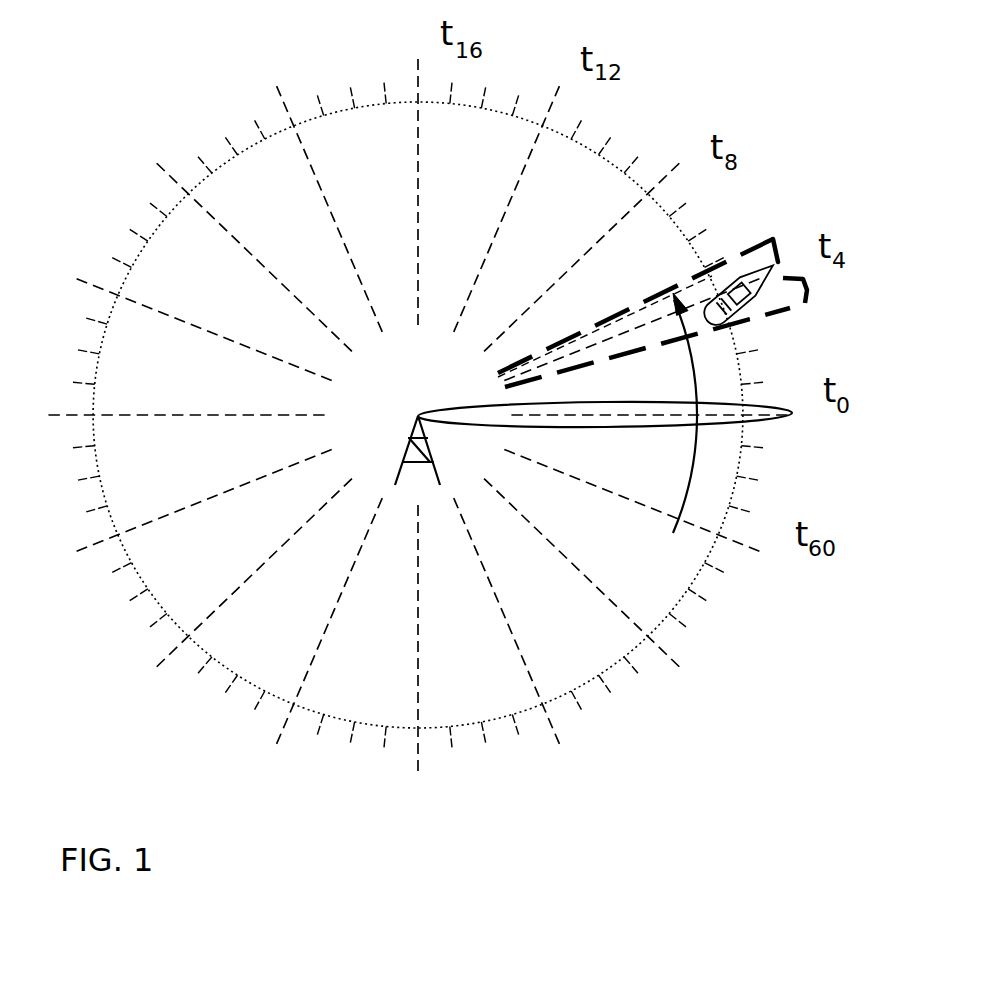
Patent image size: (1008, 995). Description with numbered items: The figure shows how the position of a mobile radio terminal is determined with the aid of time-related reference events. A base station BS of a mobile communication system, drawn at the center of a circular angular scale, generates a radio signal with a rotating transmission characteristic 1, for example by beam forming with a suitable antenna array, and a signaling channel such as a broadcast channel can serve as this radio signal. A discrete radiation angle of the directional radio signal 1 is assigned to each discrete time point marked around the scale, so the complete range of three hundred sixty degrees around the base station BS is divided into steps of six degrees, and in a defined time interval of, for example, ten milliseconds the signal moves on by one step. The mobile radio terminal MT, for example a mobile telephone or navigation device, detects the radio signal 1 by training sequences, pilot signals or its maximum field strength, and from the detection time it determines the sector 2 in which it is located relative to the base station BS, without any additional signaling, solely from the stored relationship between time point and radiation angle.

The base station BS is at (400, 430).
The mobile radio terminal MT is at (750, 257).
The rotating transmission characteristic 1 is at (743, 423).
The sector 2 is at (767, 303).